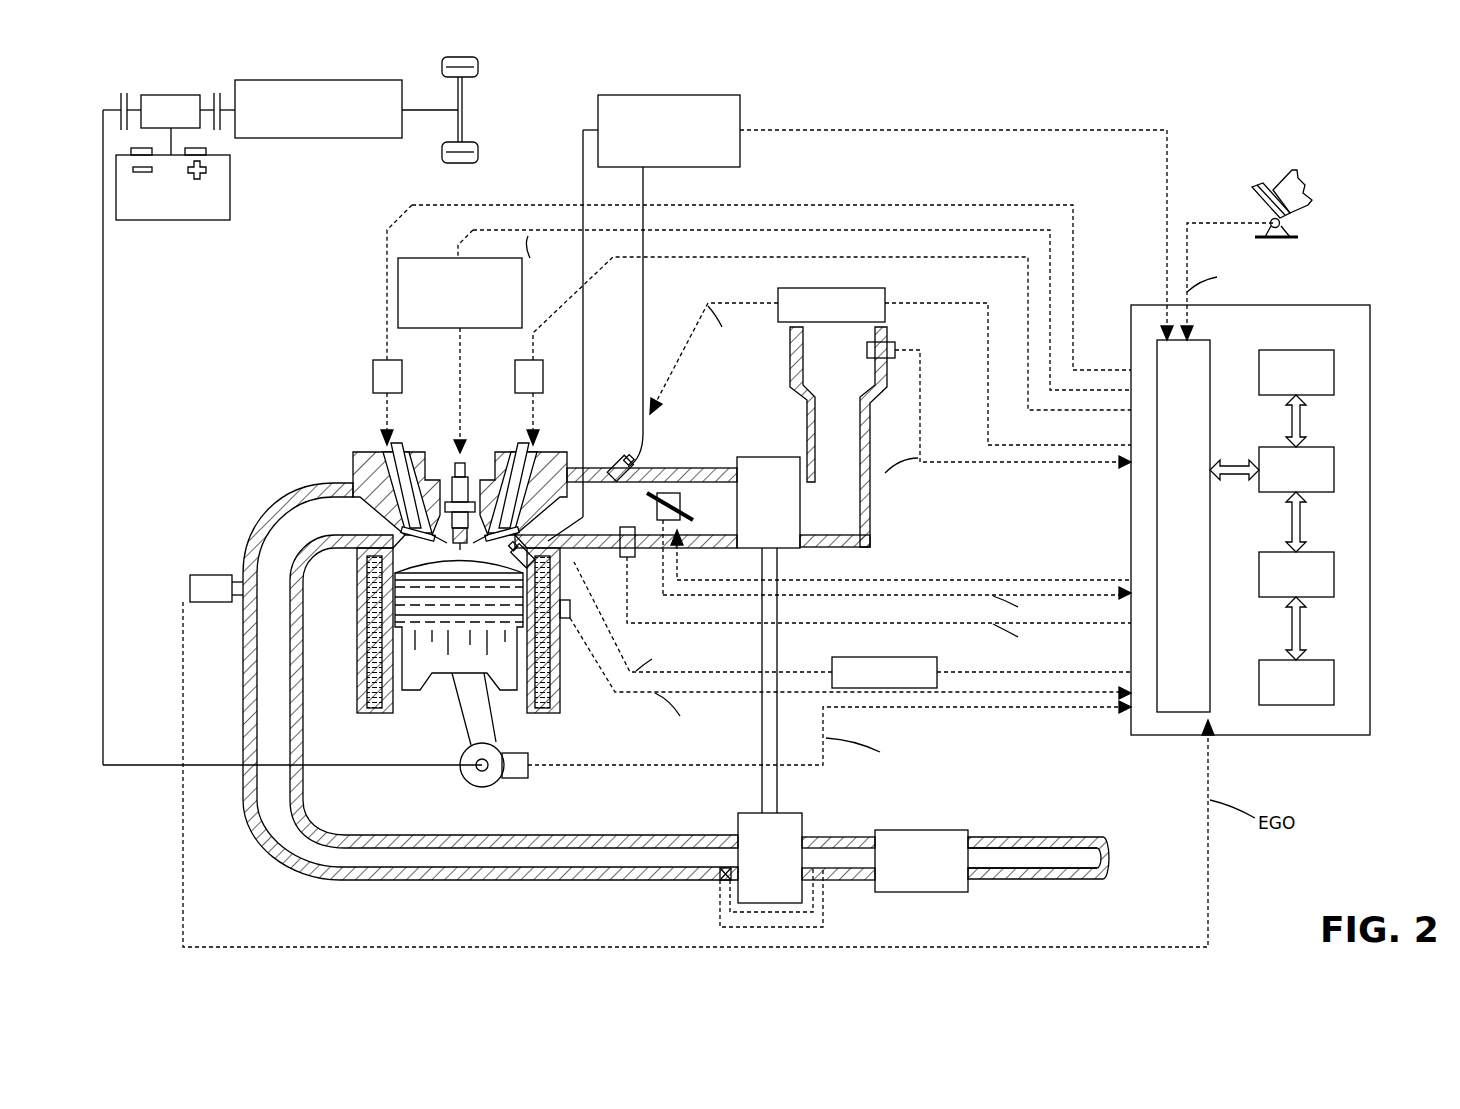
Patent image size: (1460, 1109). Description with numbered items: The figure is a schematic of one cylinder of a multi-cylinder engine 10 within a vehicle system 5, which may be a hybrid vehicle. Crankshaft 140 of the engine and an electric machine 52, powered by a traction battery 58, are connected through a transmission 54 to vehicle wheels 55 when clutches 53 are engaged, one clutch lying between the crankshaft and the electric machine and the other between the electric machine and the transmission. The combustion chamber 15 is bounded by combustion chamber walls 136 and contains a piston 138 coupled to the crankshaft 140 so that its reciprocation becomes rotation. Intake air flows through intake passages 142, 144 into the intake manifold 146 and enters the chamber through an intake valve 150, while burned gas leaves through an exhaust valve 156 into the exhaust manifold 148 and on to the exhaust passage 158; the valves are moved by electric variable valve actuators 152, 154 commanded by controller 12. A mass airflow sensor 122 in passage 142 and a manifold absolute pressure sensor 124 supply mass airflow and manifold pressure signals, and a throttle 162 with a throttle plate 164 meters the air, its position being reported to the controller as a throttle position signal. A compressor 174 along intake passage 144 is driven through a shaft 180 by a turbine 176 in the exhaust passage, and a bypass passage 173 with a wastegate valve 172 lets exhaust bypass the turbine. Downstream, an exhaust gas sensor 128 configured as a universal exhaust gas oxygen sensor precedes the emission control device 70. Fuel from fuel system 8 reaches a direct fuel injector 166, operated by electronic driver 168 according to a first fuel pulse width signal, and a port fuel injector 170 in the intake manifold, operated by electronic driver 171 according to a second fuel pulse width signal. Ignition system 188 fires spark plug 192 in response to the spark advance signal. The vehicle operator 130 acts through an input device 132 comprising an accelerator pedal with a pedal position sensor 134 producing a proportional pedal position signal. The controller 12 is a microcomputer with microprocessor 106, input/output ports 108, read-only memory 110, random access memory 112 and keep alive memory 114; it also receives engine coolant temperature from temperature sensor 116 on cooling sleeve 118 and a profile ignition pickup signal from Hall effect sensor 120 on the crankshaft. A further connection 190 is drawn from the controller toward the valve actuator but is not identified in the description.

The vehicle system 5 is at (1368, 104).
The fuel system 8 is at (709, 96).
The engine 10 is at (280, 397).
The controller 12 is at (1371, 308).
The combustion chamber 15 is at (393, 560).
The electric machine 52 is at (170, 95).
The clutches 53 is at (121, 100).
The transmission 54 is at (380, 138).
The vehicle wheels 55 is at (466, 163).
The traction battery 58 is at (168, 221).
The emission control device 70 is at (921, 861).
The microprocessor 106 is at (1335, 462).
The input/output ports 108 is at (1212, 350).
The read-only memory 110 is at (1335, 372).
The random access memory 112 is at (1335, 574).
The keep alive memory 114 is at (1335, 682).
The temperature sensor 116 is at (574, 640).
The cooling sleeve 118 is at (560, 700).
The Hall effect sensor 120 is at (520, 778).
The mass airflow sensor 122 is at (889, 342).
The manifold absolute pressure sensor 124 is at (631, 566).
The exhaust gas sensor 128 is at (190, 580).
The vehicle operator 130 is at (1306, 186).
The input device 132 is at (1255, 200).
The pedal position sensor 134 is at (1283, 221).
The combustion chamber walls 136 is at (400, 705).
The piston 138 is at (442, 657).
The crankshaft 140 is at (470, 785).
The intake passage 142 is at (838, 437).
The intake passage 144 is at (692, 523).
The intake manifold 146 is at (652, 493).
The exhaust manifold 148 is at (324, 517).
The intake valve 150 is at (480, 535).
The electric variable valve actuator 152 is at (515, 372).
The electric variable valve actuator 154 is at (373, 376).
The exhaust valve 156 is at (357, 487).
The exhaust passage 158 is at (568, 882).
The throttle 162 is at (680, 494).
The throttle plate 164 is at (651, 492).
The fuel injector 166 is at (523, 546).
The electronic driver 168 is at (832, 661).
The fuel injector 170 is at (621, 460).
The electronic driver 171 is at (778, 295).
The wastegate valve 172 is at (718, 883).
The bypass passage 173 is at (720, 914).
The compressor 174 is at (768, 502).
The turbine 176 is at (770, 858).
The shaft 180 is at (762, 783).
The ignition system 188 is at (423, 258).
The signal line 190 is at (882, 205).
The spark plug 192 is at (453, 490).